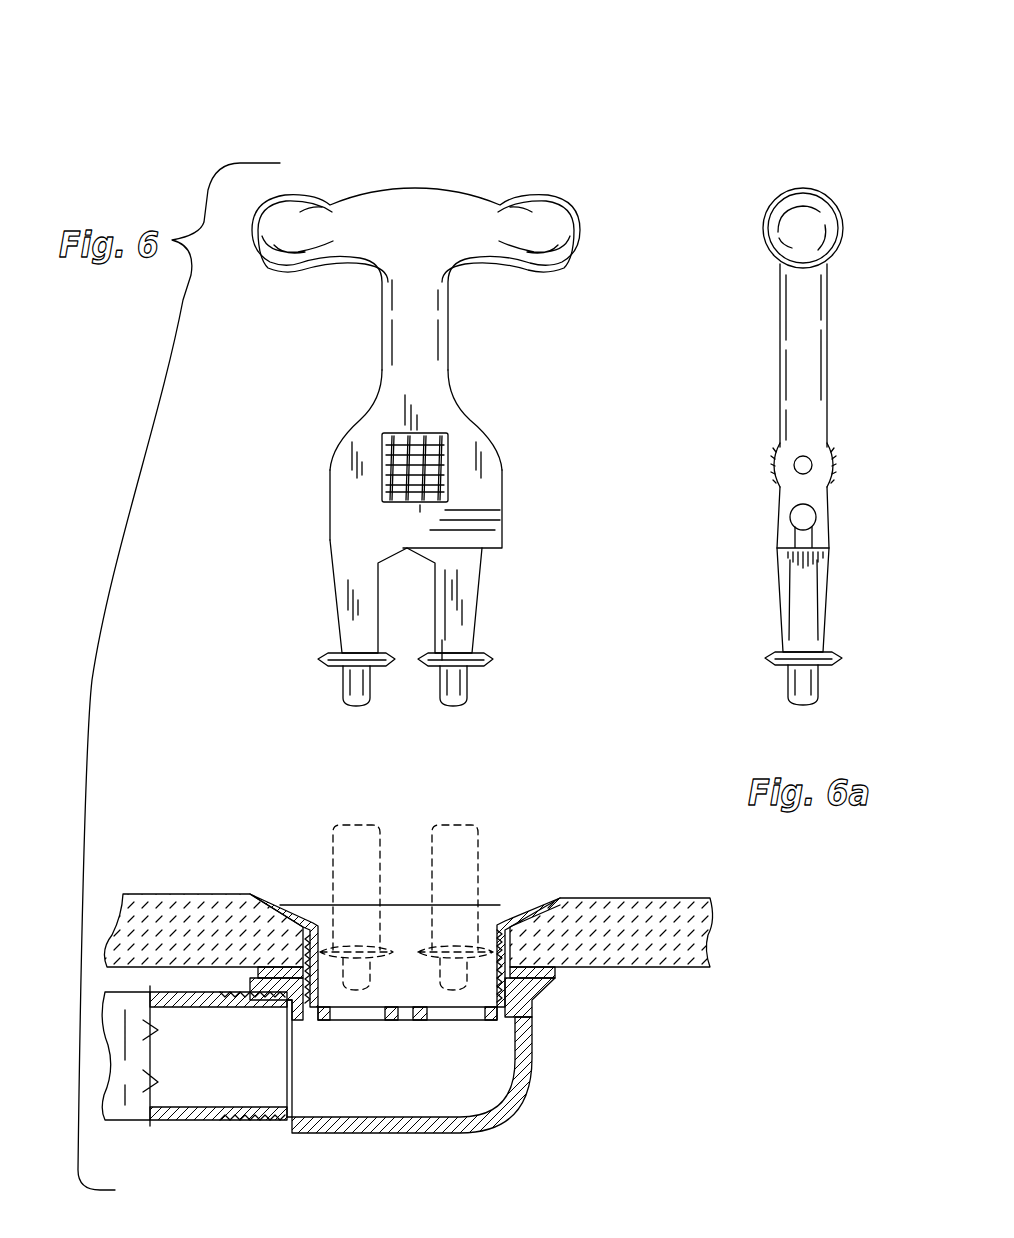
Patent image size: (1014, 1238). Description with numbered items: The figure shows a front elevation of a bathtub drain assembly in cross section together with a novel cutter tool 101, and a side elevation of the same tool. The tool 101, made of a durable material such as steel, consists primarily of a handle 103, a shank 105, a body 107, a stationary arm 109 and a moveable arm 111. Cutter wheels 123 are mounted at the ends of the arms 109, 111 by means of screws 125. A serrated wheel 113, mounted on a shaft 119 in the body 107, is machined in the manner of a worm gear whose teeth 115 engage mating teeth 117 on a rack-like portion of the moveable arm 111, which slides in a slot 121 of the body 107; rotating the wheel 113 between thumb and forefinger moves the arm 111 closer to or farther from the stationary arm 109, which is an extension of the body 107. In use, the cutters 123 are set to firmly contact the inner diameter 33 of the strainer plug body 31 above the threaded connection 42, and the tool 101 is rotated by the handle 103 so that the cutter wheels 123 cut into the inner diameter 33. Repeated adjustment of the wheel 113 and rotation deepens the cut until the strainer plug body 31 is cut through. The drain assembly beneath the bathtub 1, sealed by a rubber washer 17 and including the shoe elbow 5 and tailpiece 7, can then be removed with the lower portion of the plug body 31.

In FIG. 6, the tool 101 is at (390, 125).
In FIG. 6, the handle 103 is at (545, 205).
In FIG. 6A, the handle 103 is at (800, 255).
In FIG. 6, the shank 105 is at (383, 356).
In FIG. 6A, the shank 105 is at (780, 380).
In FIG. 6, the body 107 is at (345, 440).
In FIG. 6, the stationary arm 109 is at (333, 592).
In FIG. 6, the moveable arm 111 is at (478, 636).
In FIG. 6A, the moveable arm 111 is at (778, 598).
In FIG. 6, the serrated wheel 113 is at (383, 462).
In FIG. 6A, the serrated wheel 113 is at (776, 462).
In FIG. 6, the teeth 115 is at (435, 448).
In FIG. 6, the mating teeth 117 is at (420, 505).
In FIG. 6A, the shaft 119 is at (795, 468).
In FIG. 6A, the slot 121 is at (792, 521).
In FIG. 6, the cutter wheel 123 is at (388, 668).
In FIG. 6A, the cutter wheel 123 is at (778, 667).
In FIG. 6, the screw 125 is at (362, 706).
In FIG. 6A, the screw 125 is at (812, 702).
In FIG. 6, the bathtub 1 is at (125, 897).
In FIG. 6, the strainer plug body 31 is at (528, 905).
In FIG. 6, the inner diameter 33 is at (330, 935).
In FIG. 6, the rubber washer 17 is at (553, 977).
In FIG. 6, the threaded connection 42 is at (513, 1005).
In FIG. 6, the shoe elbow 5 is at (510, 1100).
In FIG. 6, the tailpiece 7 is at (200, 1116).